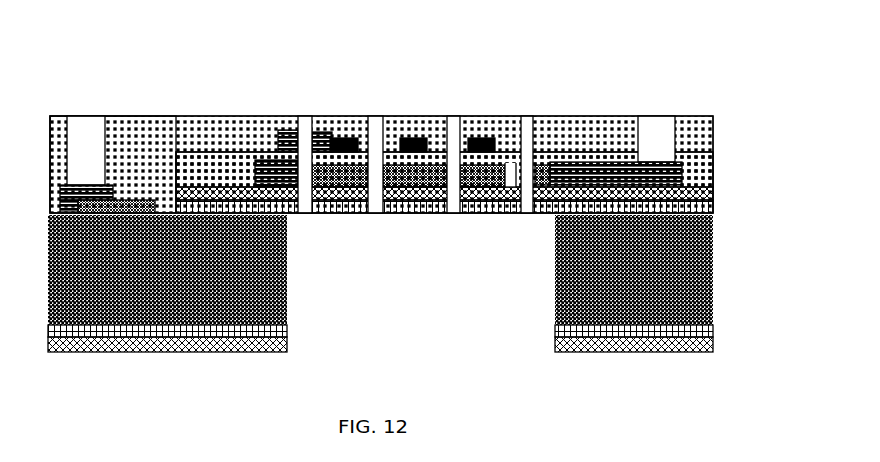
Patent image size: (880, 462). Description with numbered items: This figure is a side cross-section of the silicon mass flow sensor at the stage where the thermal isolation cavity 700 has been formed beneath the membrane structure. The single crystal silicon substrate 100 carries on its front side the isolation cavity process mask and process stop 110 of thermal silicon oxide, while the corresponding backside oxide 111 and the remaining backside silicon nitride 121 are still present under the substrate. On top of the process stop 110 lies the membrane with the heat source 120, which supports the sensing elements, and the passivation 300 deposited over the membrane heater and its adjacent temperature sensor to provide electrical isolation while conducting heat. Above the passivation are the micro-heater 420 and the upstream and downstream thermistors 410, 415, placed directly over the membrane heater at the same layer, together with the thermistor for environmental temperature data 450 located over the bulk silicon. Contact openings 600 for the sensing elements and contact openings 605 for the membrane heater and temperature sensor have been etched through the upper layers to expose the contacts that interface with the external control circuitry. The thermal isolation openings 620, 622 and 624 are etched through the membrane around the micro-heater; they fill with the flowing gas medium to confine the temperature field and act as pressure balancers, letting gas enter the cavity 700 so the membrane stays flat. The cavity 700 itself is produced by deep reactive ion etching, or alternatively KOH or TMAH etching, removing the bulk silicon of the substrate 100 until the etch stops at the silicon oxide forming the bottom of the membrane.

The single crystal silicon substrate 100 is at (673, 255).
The isolation cavity process mask and process stop 110 is at (671, 207).
The isolation cavity process mask and process stop 111 is at (709, 328).
The heat source 120 is at (676, 195).
The backside silicon nitride 121 is at (711, 347).
The passivation 300 is at (231, 165).
The upstream thermistor 410 is at (344, 136).
The downstream thermistor 415 is at (489, 138).
The micro-heater 420 is at (414, 138).
The thermistor for environmental temperature data 450 is at (137, 205).
The contacts for the sensing elements 600 is at (81, 152).
The contacts for the membrane heater and temperature sensor 605 is at (666, 130).
The thermal isolation opening 620 is at (303, 128).
The thermal isolation opening 622 is at (376, 128).
The thermal isolation opening 624 is at (531, 128).
The cavity 700 is at (423, 258).